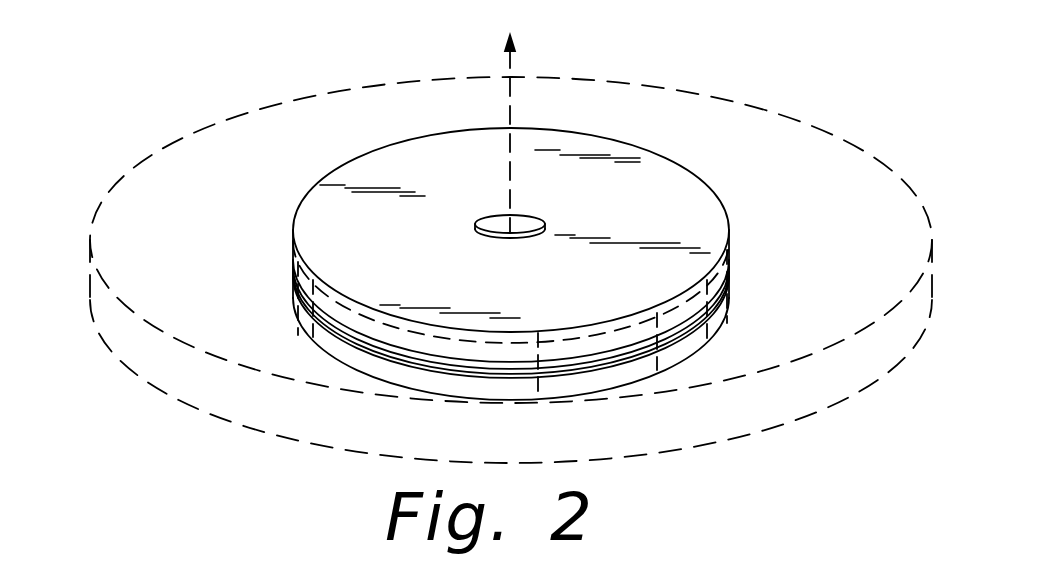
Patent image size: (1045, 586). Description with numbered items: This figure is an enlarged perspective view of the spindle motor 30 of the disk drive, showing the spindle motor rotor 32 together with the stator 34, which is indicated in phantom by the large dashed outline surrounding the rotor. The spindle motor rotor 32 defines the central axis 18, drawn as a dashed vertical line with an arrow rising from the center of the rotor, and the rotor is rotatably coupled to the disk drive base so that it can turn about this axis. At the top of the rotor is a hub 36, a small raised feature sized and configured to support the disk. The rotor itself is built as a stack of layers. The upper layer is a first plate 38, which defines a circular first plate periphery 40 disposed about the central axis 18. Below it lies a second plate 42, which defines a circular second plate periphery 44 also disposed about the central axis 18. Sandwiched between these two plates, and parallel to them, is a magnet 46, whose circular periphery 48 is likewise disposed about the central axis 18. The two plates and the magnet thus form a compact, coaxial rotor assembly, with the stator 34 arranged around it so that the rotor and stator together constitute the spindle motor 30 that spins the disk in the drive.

The central axis 18 is at (495, 94).
The spindle motor 30 is at (519, 269).
The spindle motor rotor 32 is at (650, 193).
The stator 34 is at (803, 151).
The hub 36 is at (495, 218).
The first plate 38 is at (713, 212).
The first plate periphery 40 is at (736, 251).
The second plate 42 is at (668, 370).
The second plate periphery 44 is at (607, 382).
The magnet 46 is at (380, 358).
The magnet periphery 48 is at (430, 360).